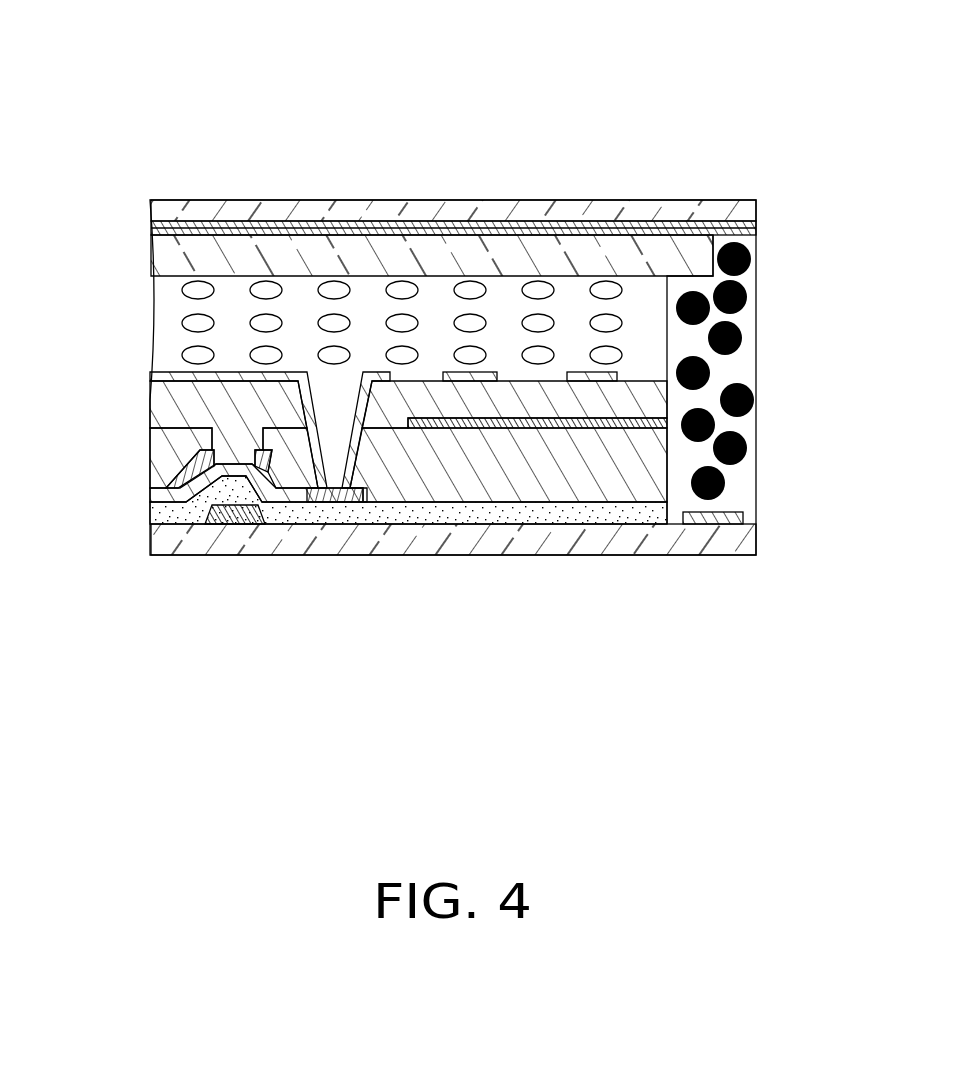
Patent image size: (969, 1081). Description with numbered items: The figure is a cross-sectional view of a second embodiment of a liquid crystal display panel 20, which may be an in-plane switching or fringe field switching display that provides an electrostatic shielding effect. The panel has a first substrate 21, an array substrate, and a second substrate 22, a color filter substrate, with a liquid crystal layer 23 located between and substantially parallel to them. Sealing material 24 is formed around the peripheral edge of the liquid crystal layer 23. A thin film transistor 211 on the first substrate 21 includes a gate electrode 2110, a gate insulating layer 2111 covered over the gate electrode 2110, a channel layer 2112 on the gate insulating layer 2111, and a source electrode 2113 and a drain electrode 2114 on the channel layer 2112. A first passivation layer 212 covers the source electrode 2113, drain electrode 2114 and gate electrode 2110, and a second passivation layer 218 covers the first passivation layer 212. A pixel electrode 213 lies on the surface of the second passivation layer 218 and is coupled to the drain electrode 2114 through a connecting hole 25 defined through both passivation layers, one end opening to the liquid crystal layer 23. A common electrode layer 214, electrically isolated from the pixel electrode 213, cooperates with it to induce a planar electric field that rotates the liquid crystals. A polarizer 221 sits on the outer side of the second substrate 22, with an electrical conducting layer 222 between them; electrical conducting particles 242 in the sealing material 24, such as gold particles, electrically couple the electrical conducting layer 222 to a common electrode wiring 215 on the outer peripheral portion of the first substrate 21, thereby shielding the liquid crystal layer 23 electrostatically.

The liquid crystal display panel 20 is at (479, 98).
The first substrate 21 is at (741, 540).
The thin film transistor 211 is at (252, 498).
The gate electrode 2110 is at (228, 524).
The gate insulating layer 2111 is at (165, 516).
The channel layer 2112 is at (200, 524).
The source electrode 2113 is at (165, 496).
The drain electrode 2114 is at (305, 480).
The first passivation layer 212 is at (175, 452).
The pixel electrode 213 is at (160, 378).
The common electrode layer 214 is at (541, 428).
The common electrode wiring 215 is at (730, 513).
The second passivation layer 218 is at (170, 405).
The second substrate 22 is at (172, 255).
The polarizer 221 is at (178, 210).
The electrical conducting layer 222 is at (156, 228).
The liquid crystal layer 23 is at (147, 277).
The sealing material 24 is at (732, 372).
The electrical conducting particles 242 is at (741, 330).
The connecting hole 25 is at (343, 413).